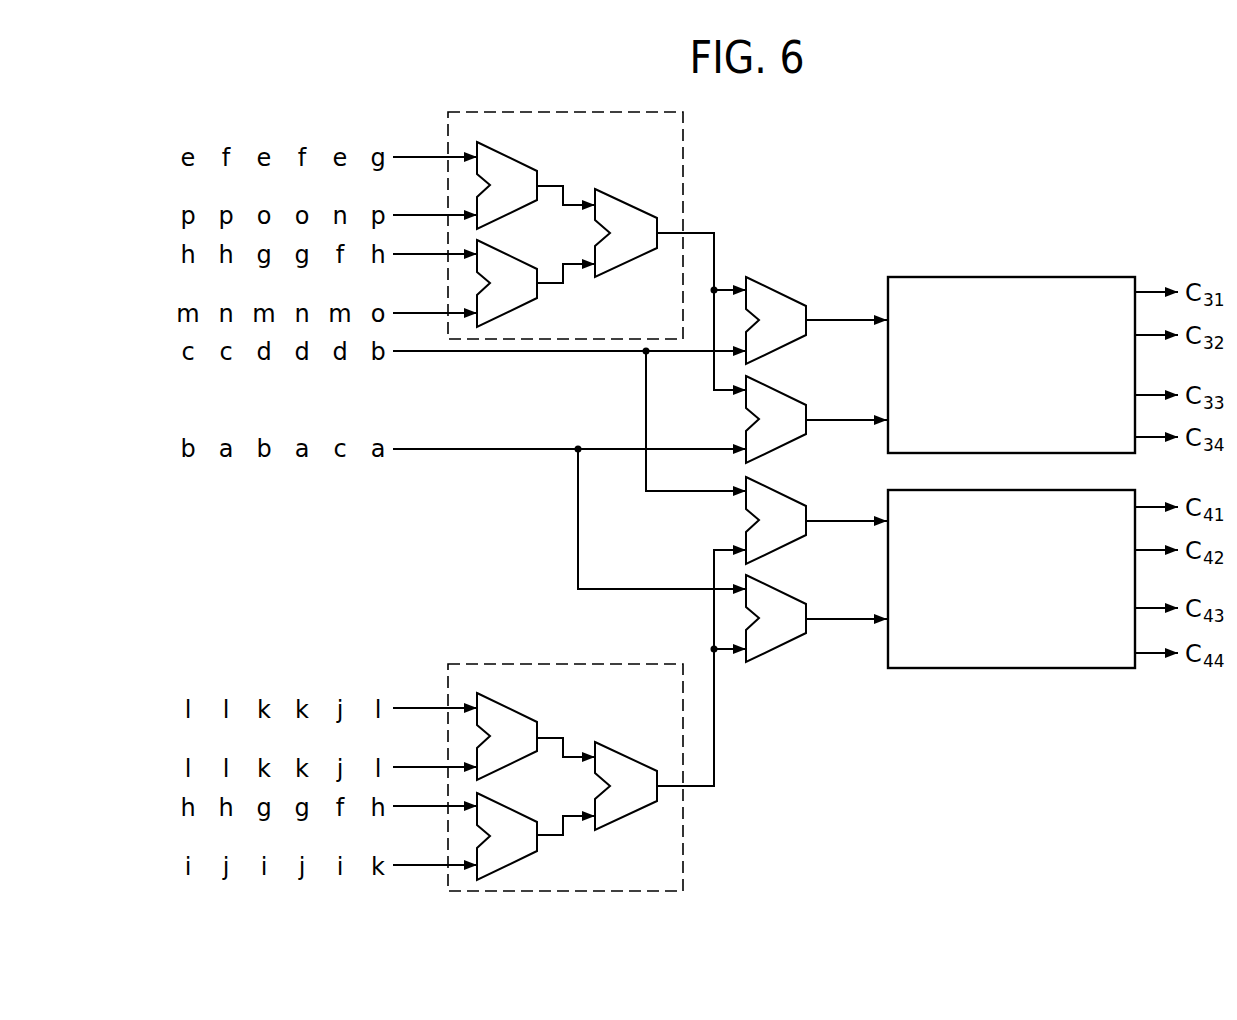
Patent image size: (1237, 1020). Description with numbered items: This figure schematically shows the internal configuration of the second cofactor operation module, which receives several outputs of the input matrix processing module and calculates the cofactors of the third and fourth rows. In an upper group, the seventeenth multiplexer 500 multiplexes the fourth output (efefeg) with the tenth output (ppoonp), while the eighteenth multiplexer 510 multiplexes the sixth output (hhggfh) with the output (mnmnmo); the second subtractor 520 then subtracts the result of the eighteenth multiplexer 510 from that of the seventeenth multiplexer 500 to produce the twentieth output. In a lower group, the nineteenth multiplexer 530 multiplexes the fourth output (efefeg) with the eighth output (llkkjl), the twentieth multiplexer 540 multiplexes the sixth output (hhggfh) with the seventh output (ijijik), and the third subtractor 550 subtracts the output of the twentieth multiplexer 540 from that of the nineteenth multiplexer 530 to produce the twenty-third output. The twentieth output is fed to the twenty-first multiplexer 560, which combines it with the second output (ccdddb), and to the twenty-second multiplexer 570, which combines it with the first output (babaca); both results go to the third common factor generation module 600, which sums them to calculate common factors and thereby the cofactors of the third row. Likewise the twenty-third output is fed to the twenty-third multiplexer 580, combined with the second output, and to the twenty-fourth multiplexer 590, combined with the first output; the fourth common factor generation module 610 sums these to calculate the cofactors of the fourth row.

The seventeenth multiplexer 500 is at (520, 160).
The eighteenth multiplexer 510 is at (528, 259).
The second subtractor 520 is at (634, 207).
The nineteenth multiplexer 530 is at (520, 711).
The twentieth multiplexer 540 is at (528, 812).
The third subtractor 550 is at (634, 760).
The twenty-first multiplexer 560 is at (790, 295).
The twenty-second multiplexer 570 is at (790, 394).
The twenty-third multiplexer 580 is at (790, 495).
The twenty-fourth multiplexer 590 is at (790, 593).
The third common factor generation module 600 is at (1110, 276).
The fourth common factor generation module 610 is at (1110, 670).